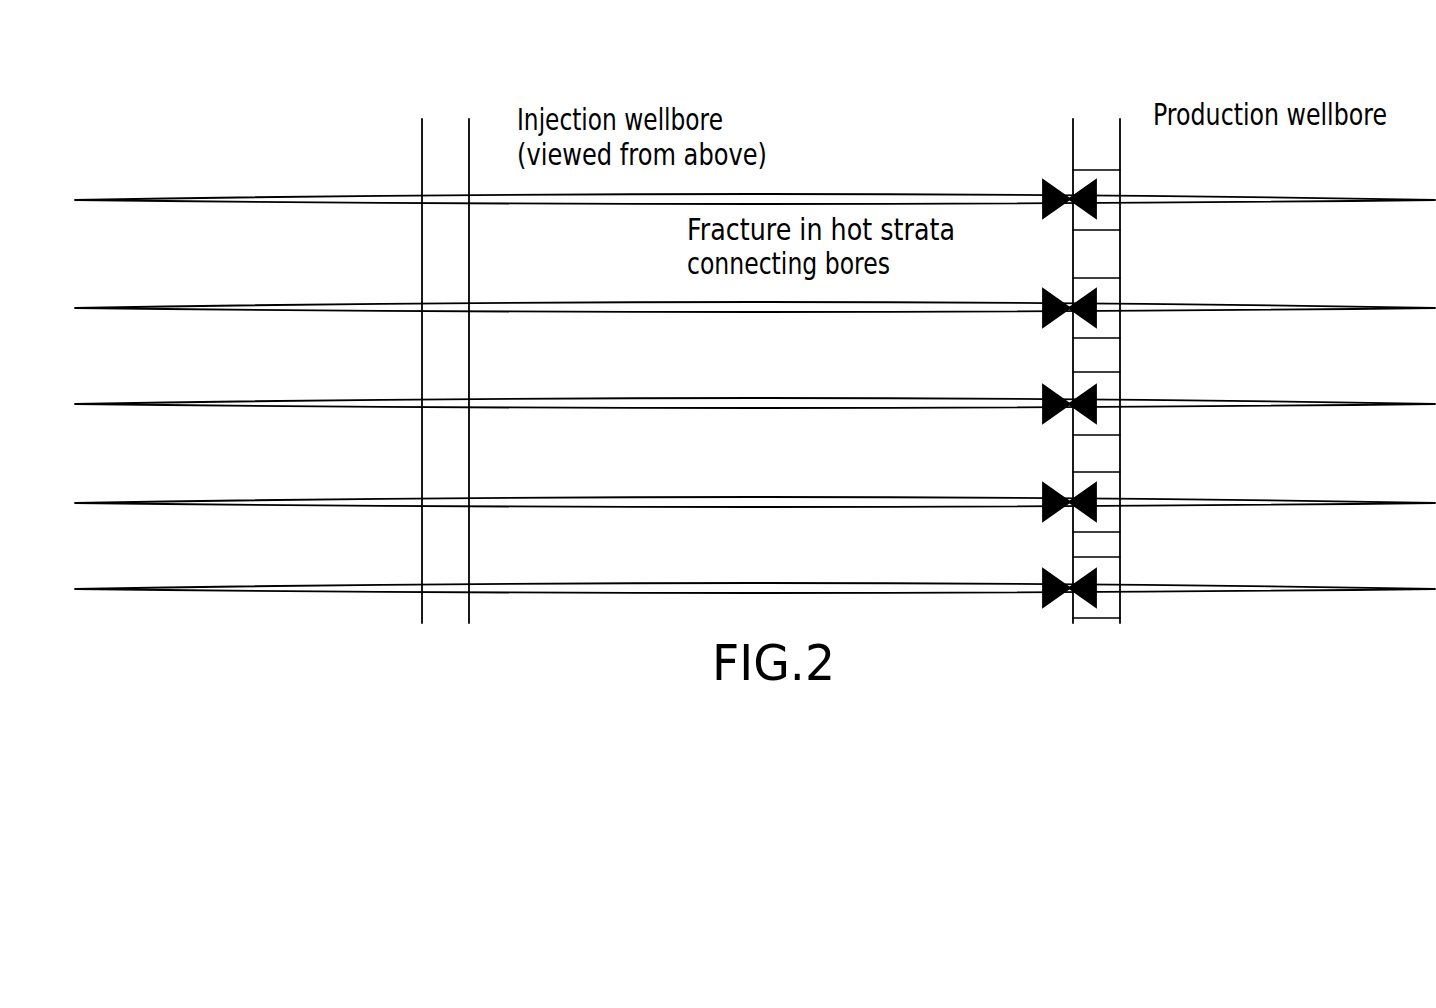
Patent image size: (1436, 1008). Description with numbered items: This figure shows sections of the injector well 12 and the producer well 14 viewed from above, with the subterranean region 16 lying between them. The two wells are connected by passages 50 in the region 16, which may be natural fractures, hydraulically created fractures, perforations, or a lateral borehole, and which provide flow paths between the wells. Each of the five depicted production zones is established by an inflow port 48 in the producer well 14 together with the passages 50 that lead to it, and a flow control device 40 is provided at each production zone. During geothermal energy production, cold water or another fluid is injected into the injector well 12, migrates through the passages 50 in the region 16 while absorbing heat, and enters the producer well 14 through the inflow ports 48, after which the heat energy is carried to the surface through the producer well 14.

The injector well 12 is at (449, 130).
The producer well 14 is at (1100, 130).
The region 16 is at (888, 142).
The flow control device 40 is at (1054, 212).
The inflow port 48 is at (1108, 214).
The passages 50 is at (669, 204).